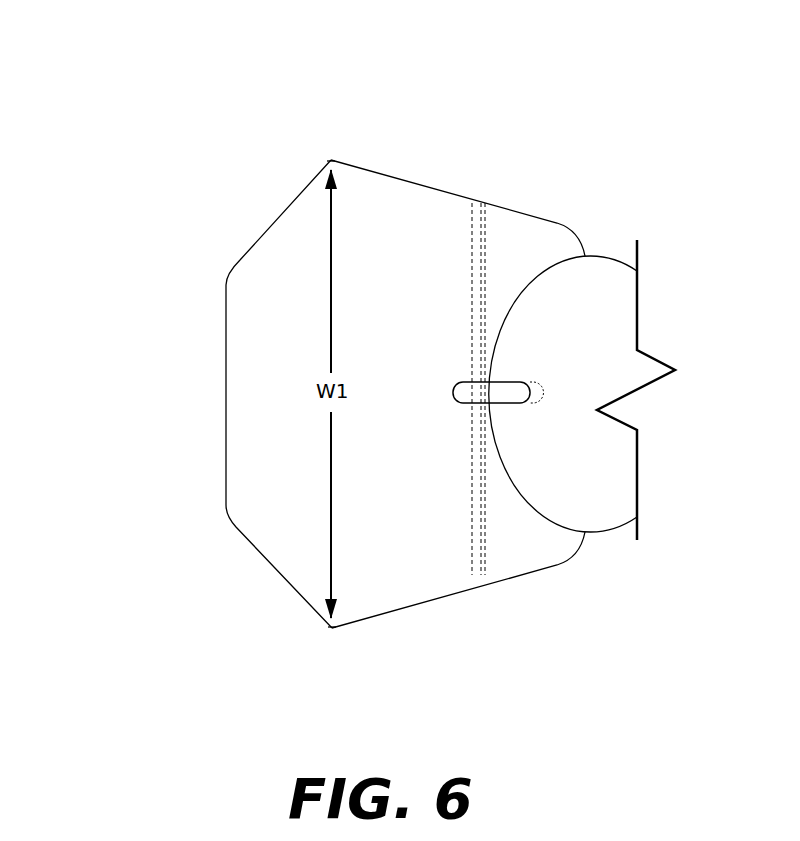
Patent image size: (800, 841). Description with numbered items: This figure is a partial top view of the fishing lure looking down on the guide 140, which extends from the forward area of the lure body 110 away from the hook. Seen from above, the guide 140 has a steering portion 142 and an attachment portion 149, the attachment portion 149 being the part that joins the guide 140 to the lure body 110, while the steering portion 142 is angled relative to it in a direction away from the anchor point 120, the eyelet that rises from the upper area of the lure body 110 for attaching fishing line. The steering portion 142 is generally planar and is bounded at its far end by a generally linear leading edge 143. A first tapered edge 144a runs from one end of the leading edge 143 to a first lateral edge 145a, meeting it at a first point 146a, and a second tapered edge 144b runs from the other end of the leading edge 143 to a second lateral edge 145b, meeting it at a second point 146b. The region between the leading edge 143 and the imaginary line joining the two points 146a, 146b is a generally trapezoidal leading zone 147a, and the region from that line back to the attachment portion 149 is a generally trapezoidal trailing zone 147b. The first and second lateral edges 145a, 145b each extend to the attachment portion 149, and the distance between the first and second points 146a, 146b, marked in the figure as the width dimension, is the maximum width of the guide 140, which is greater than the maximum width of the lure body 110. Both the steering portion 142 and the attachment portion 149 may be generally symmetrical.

The guide 140 is at (560, 84).
The steering portion 142 is at (413, 400).
The leading edge 143 is at (226, 393).
The first tapered edge 144a is at (287, 208).
The second tapered edge 144b is at (281, 577).
The first lateral edge 145a is at (373, 168).
The second lateral edge 145b is at (373, 618).
The first point 146a is at (331, 159).
The second point 146b is at (332, 630).
The leading zone 147a is at (196, 394).
The trailing zone 147b is at (460, 448).
The attachment portion 149 is at (550, 235).
The anchor point 120 is at (540, 355).
The lure body 110 is at (588, 497).